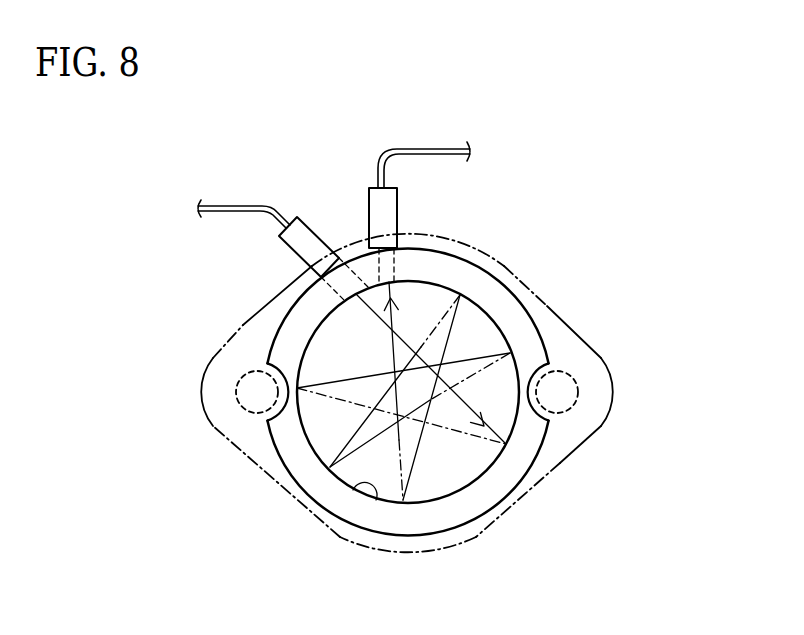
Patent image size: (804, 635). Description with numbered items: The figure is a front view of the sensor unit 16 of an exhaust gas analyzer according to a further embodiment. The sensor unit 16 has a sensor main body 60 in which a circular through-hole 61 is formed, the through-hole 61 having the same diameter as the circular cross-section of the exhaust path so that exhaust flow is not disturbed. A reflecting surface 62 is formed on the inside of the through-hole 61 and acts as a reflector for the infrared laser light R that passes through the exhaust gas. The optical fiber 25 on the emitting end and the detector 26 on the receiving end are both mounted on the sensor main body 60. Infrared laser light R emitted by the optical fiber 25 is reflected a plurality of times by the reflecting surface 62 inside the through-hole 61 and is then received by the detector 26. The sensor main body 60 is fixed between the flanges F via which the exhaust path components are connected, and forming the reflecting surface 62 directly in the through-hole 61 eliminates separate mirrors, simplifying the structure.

The sensor unit 16 is at (611, 212).
The optical fiber 25 is at (236, 207).
The detector 26 is at (398, 211).
The sensor main body 60 is at (481, 526).
The through-hole 61 is at (312, 432).
The reflecting surface 62 is at (376, 500).
The flange F is at (597, 434).
The infrared laser light R is at (373, 311).